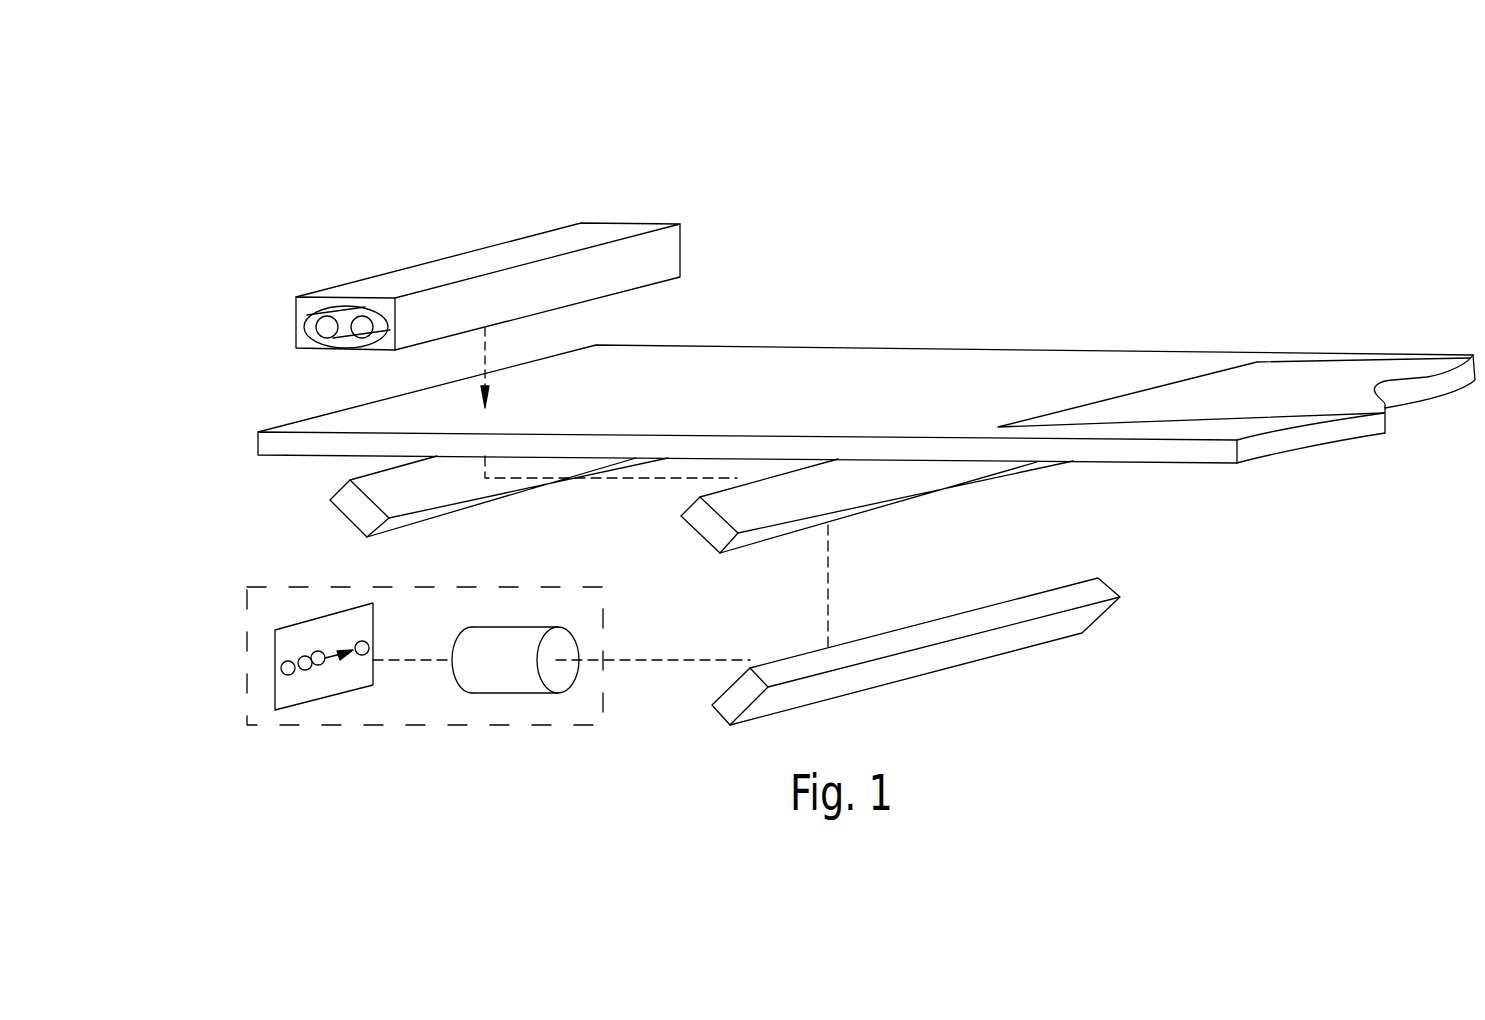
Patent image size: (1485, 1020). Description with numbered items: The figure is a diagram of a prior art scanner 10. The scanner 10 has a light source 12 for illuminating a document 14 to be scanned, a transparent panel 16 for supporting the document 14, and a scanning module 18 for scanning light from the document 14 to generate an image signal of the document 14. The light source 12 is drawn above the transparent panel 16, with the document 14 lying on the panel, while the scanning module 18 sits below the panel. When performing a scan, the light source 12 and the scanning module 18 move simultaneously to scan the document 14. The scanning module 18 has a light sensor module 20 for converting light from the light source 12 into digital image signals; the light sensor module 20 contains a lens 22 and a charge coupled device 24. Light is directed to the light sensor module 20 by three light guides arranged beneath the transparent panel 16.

The scanner 10 is at (1088, 207).
The light source 12 is at (635, 222).
The document 14 is at (1263, 372).
The transparent panel 16 is at (866, 362).
The scanning module 18 is at (652, 612).
The light sensor module 20 is at (462, 688).
The lens 22 is at (500, 683).
The charge coupled device 24 is at (308, 683).